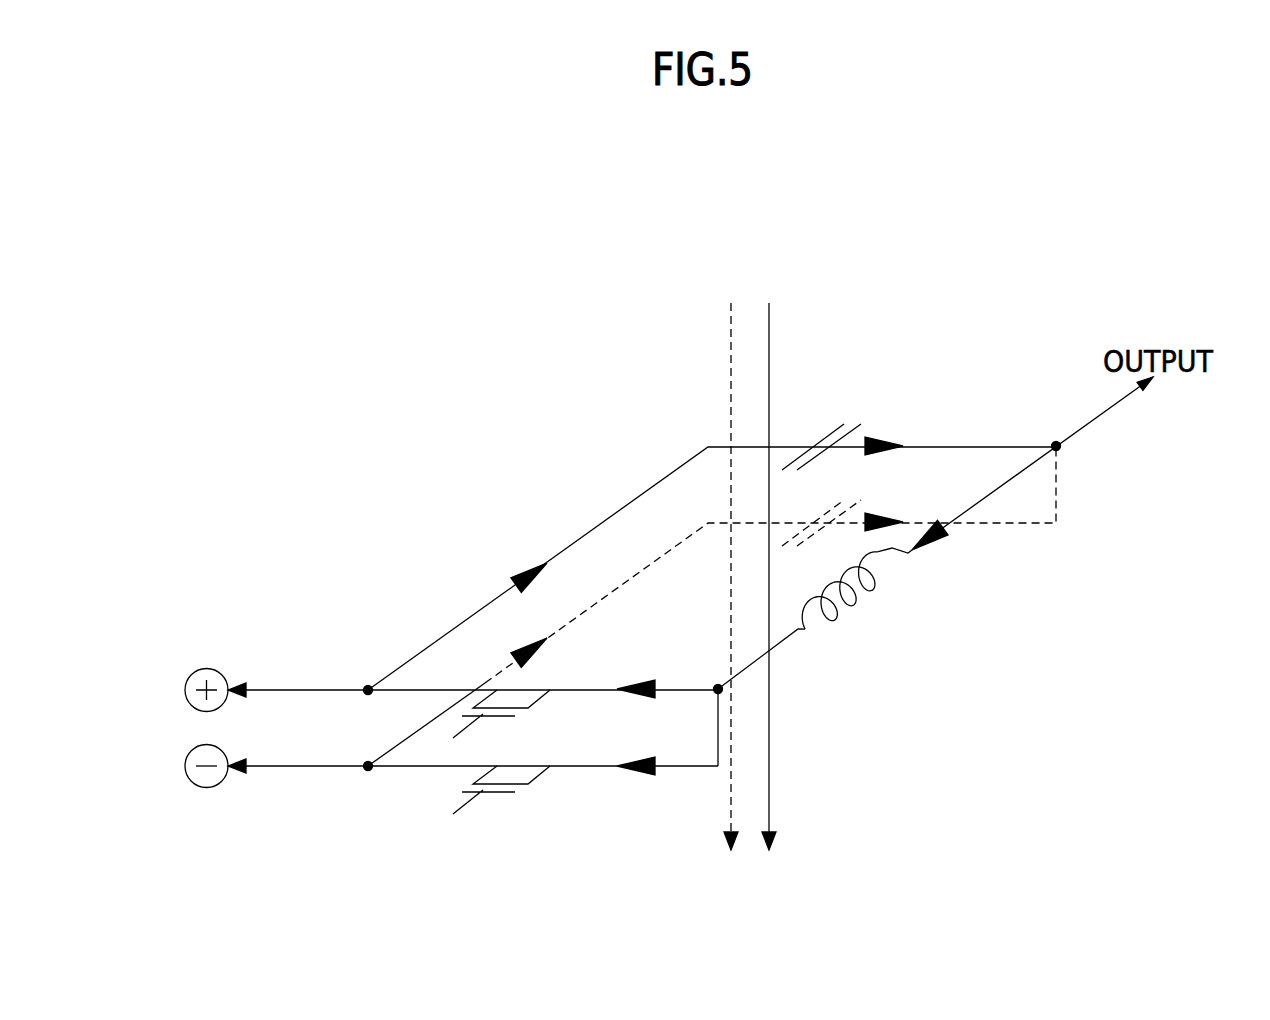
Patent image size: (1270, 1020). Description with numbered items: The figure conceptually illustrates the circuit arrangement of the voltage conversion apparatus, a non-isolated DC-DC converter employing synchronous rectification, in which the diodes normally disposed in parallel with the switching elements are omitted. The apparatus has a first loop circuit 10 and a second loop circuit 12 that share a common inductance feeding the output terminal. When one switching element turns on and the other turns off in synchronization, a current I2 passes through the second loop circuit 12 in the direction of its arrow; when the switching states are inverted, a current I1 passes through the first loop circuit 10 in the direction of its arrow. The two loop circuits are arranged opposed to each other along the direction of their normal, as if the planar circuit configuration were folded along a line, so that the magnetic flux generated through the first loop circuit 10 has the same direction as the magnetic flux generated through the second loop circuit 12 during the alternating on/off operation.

The first loop circuit 10 is at (634, 472).
The second loop circuit 12 is at (570, 792).
The current I1 is at (517, 565).
The current I2 is at (553, 654).